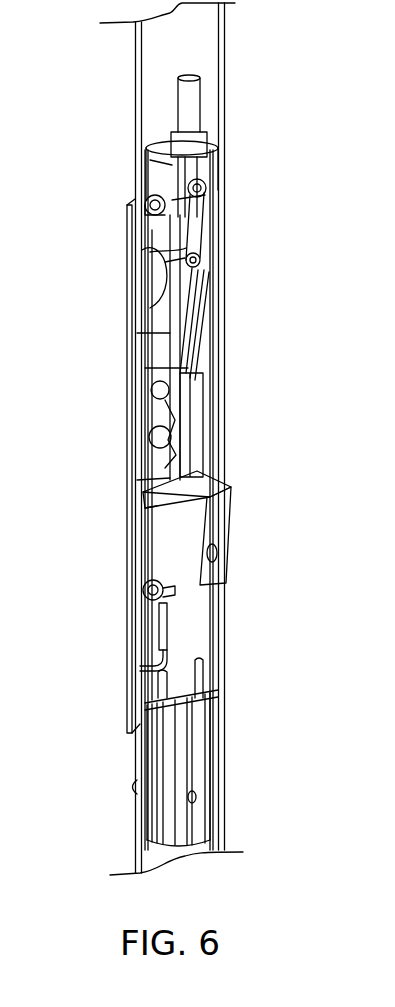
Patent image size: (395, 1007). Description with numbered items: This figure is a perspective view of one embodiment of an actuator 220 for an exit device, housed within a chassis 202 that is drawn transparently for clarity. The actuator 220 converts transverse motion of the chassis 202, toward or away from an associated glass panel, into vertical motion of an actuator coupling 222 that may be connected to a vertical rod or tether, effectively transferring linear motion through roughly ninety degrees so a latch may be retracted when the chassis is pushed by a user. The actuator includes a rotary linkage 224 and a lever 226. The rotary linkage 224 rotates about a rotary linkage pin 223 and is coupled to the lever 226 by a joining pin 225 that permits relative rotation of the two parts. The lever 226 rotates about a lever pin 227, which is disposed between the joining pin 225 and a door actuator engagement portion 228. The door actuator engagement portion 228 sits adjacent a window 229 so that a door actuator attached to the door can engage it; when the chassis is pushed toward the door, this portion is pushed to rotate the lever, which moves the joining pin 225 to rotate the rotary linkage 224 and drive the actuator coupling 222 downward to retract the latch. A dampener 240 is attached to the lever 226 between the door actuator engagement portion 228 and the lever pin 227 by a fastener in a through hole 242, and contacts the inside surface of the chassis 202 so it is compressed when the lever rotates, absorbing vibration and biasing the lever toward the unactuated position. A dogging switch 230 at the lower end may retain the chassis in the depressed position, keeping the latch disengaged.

The chassis 202 is at (222, 830).
The actuator 220 is at (258, 381).
The actuator coupling 222 is at (196, 100).
The rotary linkage pin 223 is at (140, 212).
The rotary linkage 224 is at (190, 221).
The joining pin 225 is at (210, 263).
The lever 226 is at (183, 329).
The lever pin 227 is at (178, 422).
The door actuator engagement portion 228 is at (152, 590).
The window 229 is at (156, 648).
The dogging switch 230 is at (242, 773).
The dampener 240 is at (216, 503).
The through hole 242 is at (217, 554).